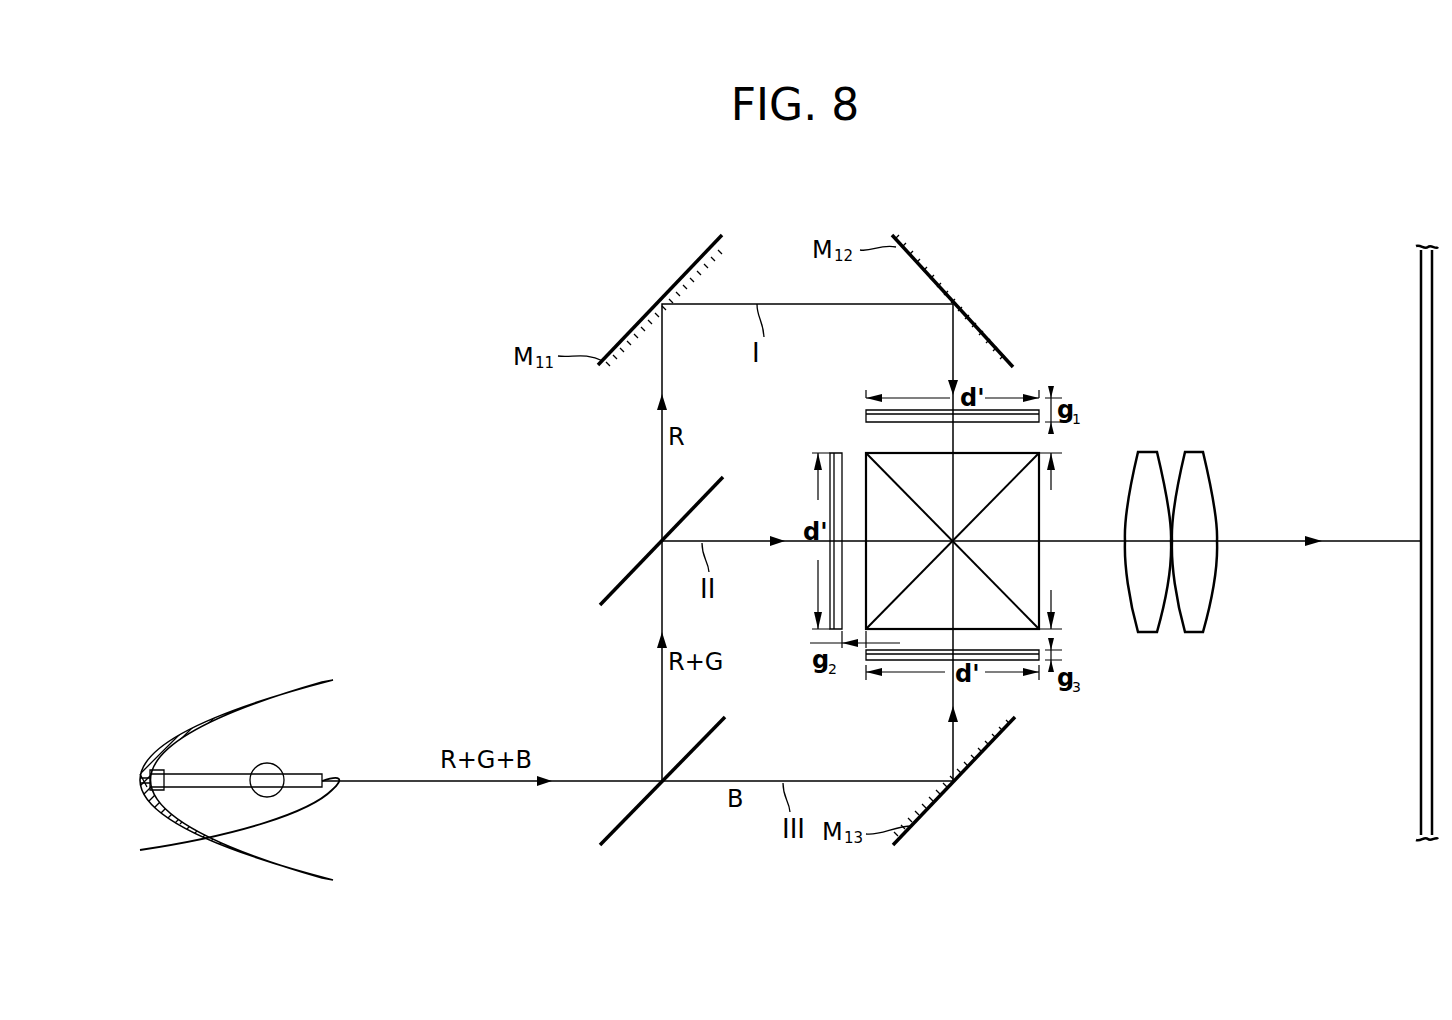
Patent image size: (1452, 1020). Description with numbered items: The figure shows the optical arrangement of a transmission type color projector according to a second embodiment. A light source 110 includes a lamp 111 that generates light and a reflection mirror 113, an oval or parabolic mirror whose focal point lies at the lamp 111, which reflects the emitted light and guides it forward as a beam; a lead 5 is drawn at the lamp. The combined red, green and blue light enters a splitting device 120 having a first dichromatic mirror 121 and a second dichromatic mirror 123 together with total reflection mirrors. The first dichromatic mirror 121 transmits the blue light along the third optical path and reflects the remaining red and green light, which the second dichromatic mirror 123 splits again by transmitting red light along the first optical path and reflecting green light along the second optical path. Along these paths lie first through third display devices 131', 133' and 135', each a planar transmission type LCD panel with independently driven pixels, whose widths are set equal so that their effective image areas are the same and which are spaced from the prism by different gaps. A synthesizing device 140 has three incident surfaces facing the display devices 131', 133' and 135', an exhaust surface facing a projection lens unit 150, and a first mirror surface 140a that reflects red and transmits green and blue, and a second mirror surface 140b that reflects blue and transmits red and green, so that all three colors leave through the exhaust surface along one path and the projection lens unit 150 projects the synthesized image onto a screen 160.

The lead wire 5 is at (230, 823).
The light source 110 is at (248, 790).
The lamp 111 is at (268, 763).
The reflection mirror 113 is at (312, 688).
The splitting device 120 is at (536, 677).
The first dichromatic mirror 121 is at (636, 812).
The second dichromatic mirror 123 is at (622, 580).
The first display device 131' is at (912, 396).
The second display device 133' is at (801, 524).
The third display device 135' is at (952, 691).
The synthesizing device 140 is at (1039, 563).
The first mirror surface 140a is at (989, 541).
The second mirror surface 140b is at (1000, 495).
The projection lens unit 150 is at (1182, 425).
The screen 160 is at (1421, 798).